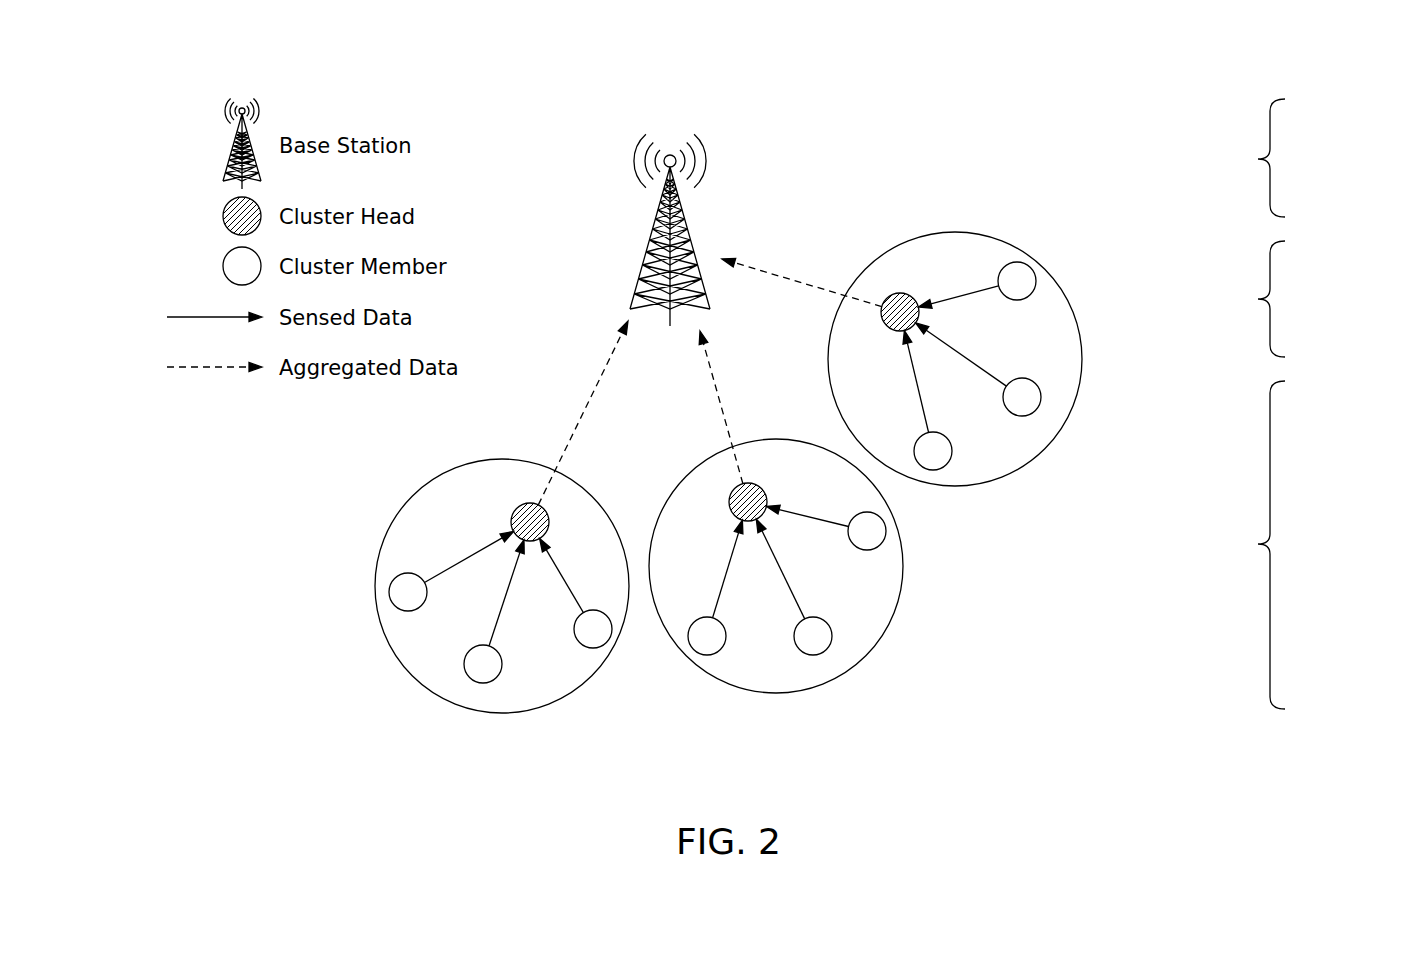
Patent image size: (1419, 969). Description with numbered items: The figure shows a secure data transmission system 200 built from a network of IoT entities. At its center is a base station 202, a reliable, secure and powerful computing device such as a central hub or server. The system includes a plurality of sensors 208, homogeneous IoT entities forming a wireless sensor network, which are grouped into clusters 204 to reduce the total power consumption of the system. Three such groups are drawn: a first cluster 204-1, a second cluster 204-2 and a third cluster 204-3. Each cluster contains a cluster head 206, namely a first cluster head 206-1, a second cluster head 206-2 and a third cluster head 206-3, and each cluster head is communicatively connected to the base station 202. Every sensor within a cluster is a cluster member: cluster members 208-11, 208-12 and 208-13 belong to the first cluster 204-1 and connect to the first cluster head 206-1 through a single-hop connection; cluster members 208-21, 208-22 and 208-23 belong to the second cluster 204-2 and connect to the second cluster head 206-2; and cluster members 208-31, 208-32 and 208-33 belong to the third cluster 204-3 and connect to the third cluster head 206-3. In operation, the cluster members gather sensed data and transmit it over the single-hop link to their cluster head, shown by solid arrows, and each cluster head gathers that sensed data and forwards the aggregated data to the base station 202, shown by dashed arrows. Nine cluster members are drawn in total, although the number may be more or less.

The secure data transmission system 200 is at (438, 62).
The base station 202 is at (708, 152).
The clusters 204 is at (1280, 158).
The first cluster 204-1 is at (516, 693).
The second cluster 204-2 is at (875, 595).
The third cluster 204-3 is at (1008, 432).
The cluster head 206 is at (1280, 299).
The first cluster head 206-1 is at (527, 512).
The second cluster head 206-2 is at (737, 497).
The third cluster head 206-3 is at (897, 300).
The sensors 208 is at (1287, 545).
The cluster member 208-11 is at (396, 597).
The cluster member 208-12 is at (472, 664).
The cluster member 208-13 is at (584, 637).
The cluster member 208-21 is at (706, 645).
The cluster member 208-22 is at (814, 645).
The cluster member 208-23 is at (862, 535).
The cluster member 208-31 is at (935, 452).
The cluster member 208-32 is at (1022, 398).
The cluster member 208-33 is at (1018, 282).